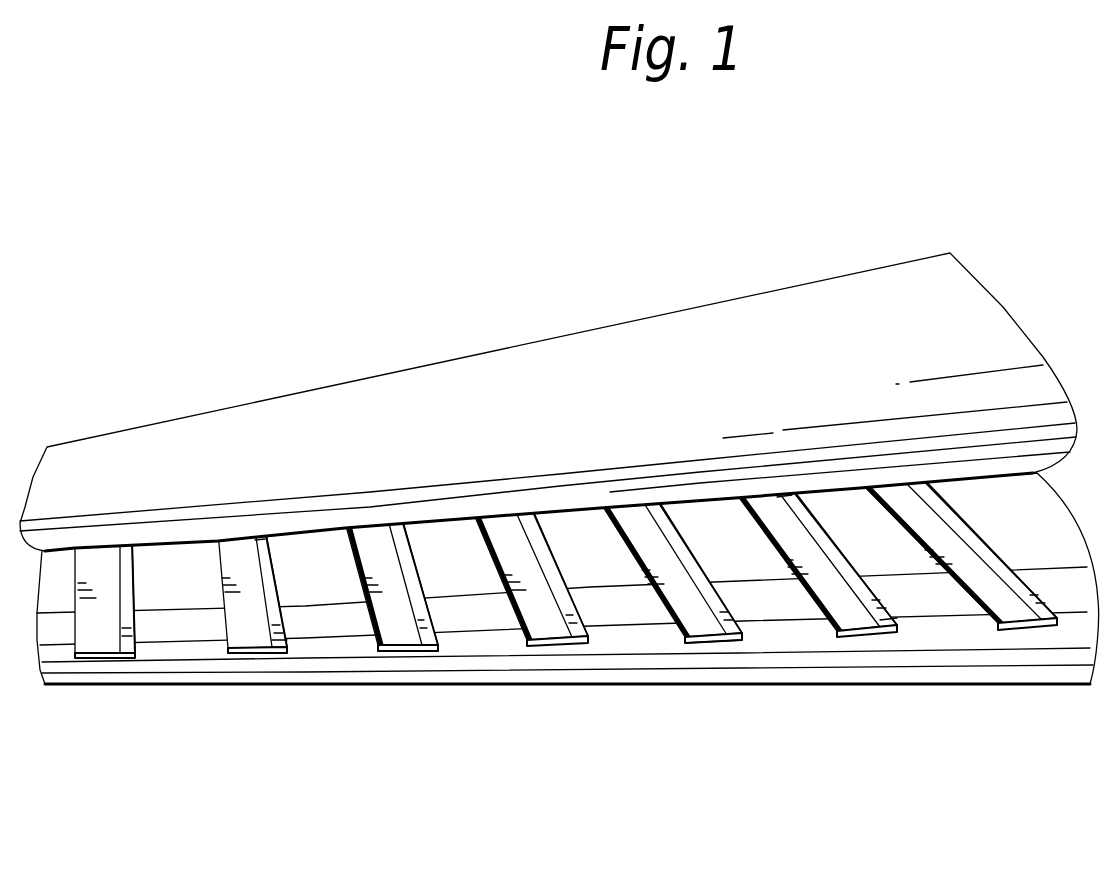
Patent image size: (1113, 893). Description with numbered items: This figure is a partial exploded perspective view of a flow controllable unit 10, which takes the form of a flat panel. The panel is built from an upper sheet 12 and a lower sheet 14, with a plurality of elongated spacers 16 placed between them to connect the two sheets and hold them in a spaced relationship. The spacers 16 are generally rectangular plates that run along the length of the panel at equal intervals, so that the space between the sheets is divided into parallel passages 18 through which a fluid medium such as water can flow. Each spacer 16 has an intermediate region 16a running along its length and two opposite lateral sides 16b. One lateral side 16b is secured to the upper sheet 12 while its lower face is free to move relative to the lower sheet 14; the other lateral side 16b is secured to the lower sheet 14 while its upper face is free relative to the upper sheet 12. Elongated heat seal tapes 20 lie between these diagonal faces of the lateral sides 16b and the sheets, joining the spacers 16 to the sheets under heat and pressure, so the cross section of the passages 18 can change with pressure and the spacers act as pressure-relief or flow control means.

The flow controllable unit 10 is at (553, 240).
The upper sheet 12 is at (430, 403).
The lower sheet 14 is at (568, 656).
The spacer 16 is at (100, 633).
The intermediate region 16a is at (257, 638).
The lateral side 16b is at (237, 638).
The passage 18 is at (183, 637).
The heat seal tape 20 is at (272, 572).